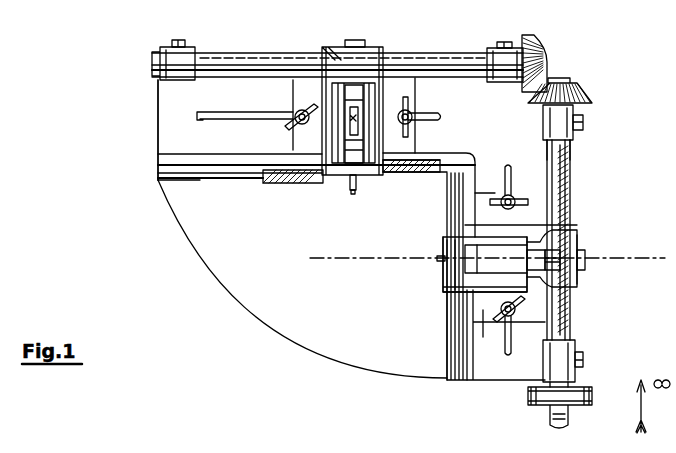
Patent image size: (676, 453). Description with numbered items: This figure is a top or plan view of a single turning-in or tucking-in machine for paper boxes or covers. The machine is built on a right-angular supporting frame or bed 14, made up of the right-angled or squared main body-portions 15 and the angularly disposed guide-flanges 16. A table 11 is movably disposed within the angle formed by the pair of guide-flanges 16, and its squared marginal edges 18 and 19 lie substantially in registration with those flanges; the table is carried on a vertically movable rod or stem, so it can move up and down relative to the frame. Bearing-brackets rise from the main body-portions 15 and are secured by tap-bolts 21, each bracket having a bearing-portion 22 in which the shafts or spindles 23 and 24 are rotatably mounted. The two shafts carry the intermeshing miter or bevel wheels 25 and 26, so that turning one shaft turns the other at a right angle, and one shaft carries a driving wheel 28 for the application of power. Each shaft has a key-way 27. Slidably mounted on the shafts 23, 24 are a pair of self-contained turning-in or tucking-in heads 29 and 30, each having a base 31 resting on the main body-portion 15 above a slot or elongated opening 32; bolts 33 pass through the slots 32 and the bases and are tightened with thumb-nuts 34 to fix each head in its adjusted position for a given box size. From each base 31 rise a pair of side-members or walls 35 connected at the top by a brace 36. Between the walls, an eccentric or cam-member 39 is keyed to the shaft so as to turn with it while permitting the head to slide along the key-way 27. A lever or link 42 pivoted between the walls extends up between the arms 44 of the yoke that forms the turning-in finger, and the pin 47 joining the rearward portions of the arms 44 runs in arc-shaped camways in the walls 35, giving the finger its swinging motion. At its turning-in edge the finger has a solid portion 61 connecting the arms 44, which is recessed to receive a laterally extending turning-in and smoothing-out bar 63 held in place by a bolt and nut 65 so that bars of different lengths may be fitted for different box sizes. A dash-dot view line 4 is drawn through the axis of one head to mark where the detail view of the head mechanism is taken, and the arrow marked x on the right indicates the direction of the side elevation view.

The axis line 4 is at (474, 256).
The table 11 is at (330, 345).
The supporting frame or bed 14 is at (156, 135).
The main body-portions 15 is at (162, 110).
The guide-flanges 16 is at (167, 172).
The marginal edge 18 is at (198, 183).
The marginal edge 19 is at (447, 357).
The tap-bolts 21 is at (177, 40).
The bearing-portion 22 is at (188, 55).
The shaft or spindle 23 is at (563, 148).
The shaft or spindle 24 is at (245, 60).
The miter or bevel wheel 25 is at (583, 90).
The miter or bevel wheel 26 is at (540, 55).
The key-way 27 is at (272, 63).
The driving wheel 28 is at (583, 406).
The turning-in or tucking-in head 29 is at (578, 245).
The turning-in or tucking-in head 30 is at (345, 26).
The base 31 is at (296, 143).
The slots or elongated openings 32 is at (198, 115).
The bolts 33 is at (294, 113).
The thumb-nuts 34 is at (287, 126).
The side-members or walls 35 is at (287, 183).
The brace 36 is at (330, 57).
The eccentric or cam-member 39 is at (352, 100).
The lever or link 42 is at (335, 177).
The arms 44 is at (333, 100).
The pin 47 is at (372, 105).
The solid portion 61 is at (372, 172).
The turning-in and smoothing-out bar 63 is at (273, 185).
The nut 65 is at (352, 190).